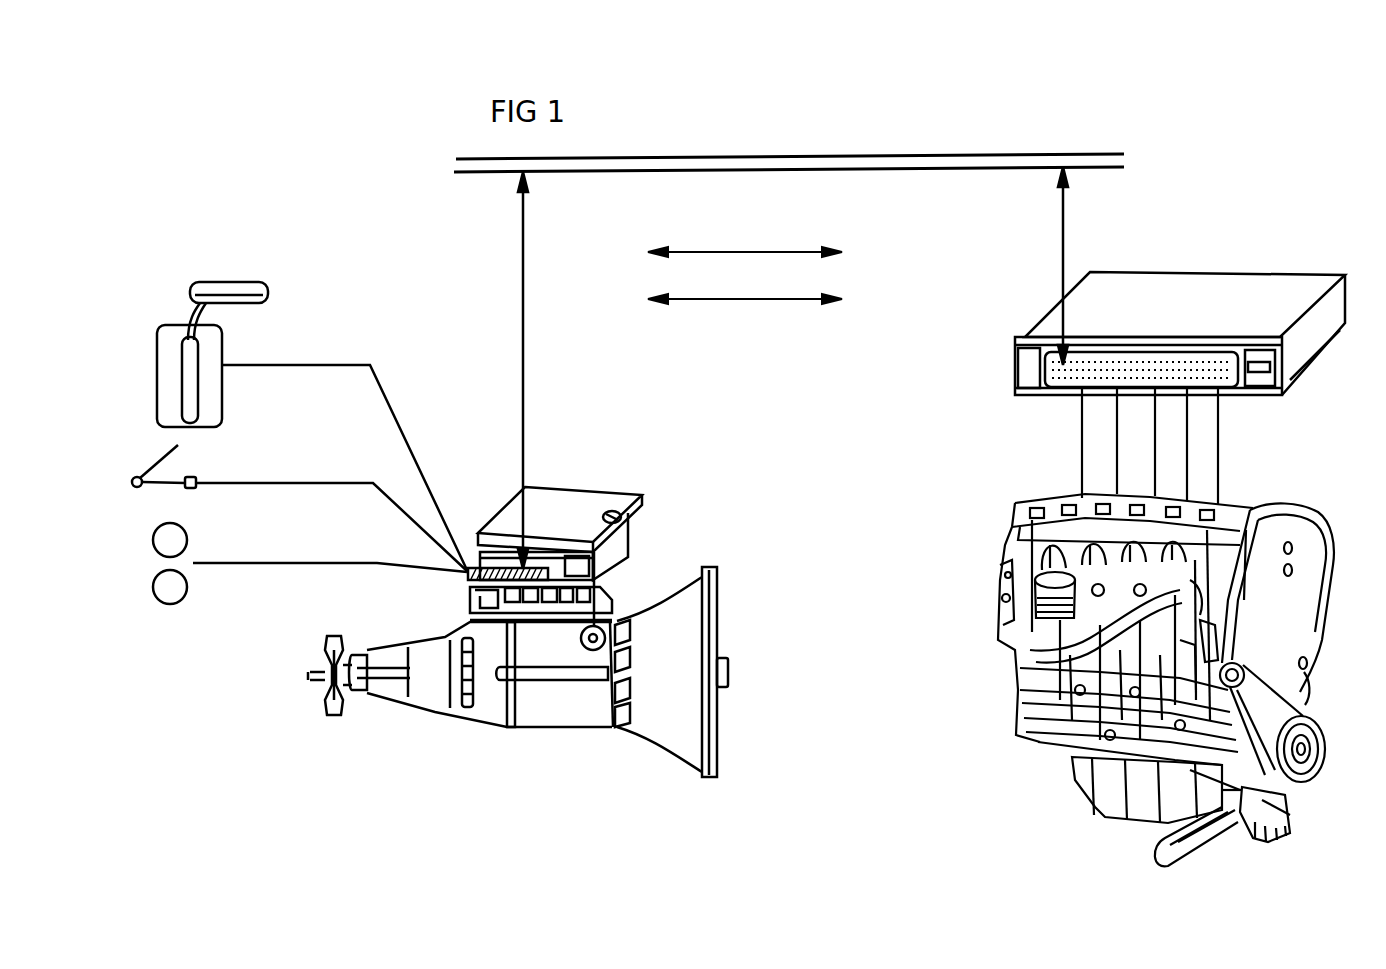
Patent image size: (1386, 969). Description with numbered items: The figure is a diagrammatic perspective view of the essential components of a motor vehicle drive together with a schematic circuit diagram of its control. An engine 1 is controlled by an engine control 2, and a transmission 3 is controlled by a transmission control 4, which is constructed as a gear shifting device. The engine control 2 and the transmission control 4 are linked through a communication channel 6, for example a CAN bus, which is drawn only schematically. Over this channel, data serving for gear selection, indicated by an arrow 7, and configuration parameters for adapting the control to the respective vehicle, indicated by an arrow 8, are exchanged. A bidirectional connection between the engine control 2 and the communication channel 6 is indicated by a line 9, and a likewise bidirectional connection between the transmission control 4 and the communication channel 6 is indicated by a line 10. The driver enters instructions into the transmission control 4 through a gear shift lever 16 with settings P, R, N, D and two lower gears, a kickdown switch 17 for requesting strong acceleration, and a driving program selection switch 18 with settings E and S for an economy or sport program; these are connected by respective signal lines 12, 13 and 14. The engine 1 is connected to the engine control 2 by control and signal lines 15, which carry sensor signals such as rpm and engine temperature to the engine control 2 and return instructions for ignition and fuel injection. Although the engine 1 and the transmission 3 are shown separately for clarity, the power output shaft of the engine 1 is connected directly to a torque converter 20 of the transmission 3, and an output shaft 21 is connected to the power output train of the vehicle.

The engine 1 is at (1293, 606).
The engine control 2 is at (1318, 320).
The transmission 3 is at (492, 698).
The transmission control 4 is at (613, 507).
The communication channel 6 is at (885, 164).
The arrow 7 is at (740, 254).
The arrow 8 is at (742, 301).
The line 9 is at (1063, 260).
The line 10 is at (522, 329).
The signal line 12 is at (410, 443).
The signal line 13 is at (397, 512).
The signal line 14 is at (408, 570).
The control and signal lines 15 is at (1220, 440).
The gear shift lever 16 is at (212, 393).
The kickdown switch 17 is at (192, 476).
The driving program selection switch 18 is at (152, 562).
The torque converter 20 is at (658, 723).
The output shaft 21 is at (312, 673).